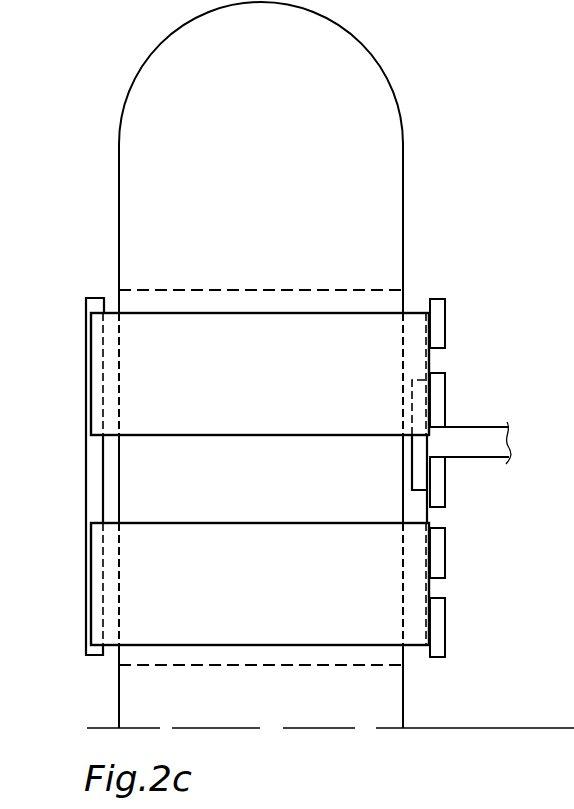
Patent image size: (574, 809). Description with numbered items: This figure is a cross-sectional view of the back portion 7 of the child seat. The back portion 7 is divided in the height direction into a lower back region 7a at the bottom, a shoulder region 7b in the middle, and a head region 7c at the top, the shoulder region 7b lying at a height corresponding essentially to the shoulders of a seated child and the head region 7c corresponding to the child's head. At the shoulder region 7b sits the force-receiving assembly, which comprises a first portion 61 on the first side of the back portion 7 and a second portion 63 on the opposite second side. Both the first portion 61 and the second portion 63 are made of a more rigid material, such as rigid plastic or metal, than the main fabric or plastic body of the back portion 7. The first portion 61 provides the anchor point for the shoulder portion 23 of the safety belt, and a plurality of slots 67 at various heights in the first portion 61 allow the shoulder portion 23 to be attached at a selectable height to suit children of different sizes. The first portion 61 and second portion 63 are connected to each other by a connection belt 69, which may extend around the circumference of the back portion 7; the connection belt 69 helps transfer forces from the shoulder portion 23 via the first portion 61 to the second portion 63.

The back portion 7 is at (297, 365).
The lower back region 7a is at (260, 709).
The shoulder region 7b is at (260, 488).
The head region 7c is at (260, 214).
The shoulder portion of the safety belt 23 is at (463, 439).
The first portion 61 is at (440, 314).
The second portion 63 is at (96, 470).
The slots 67 is at (438, 359).
The connection belt 69 is at (340, 406).